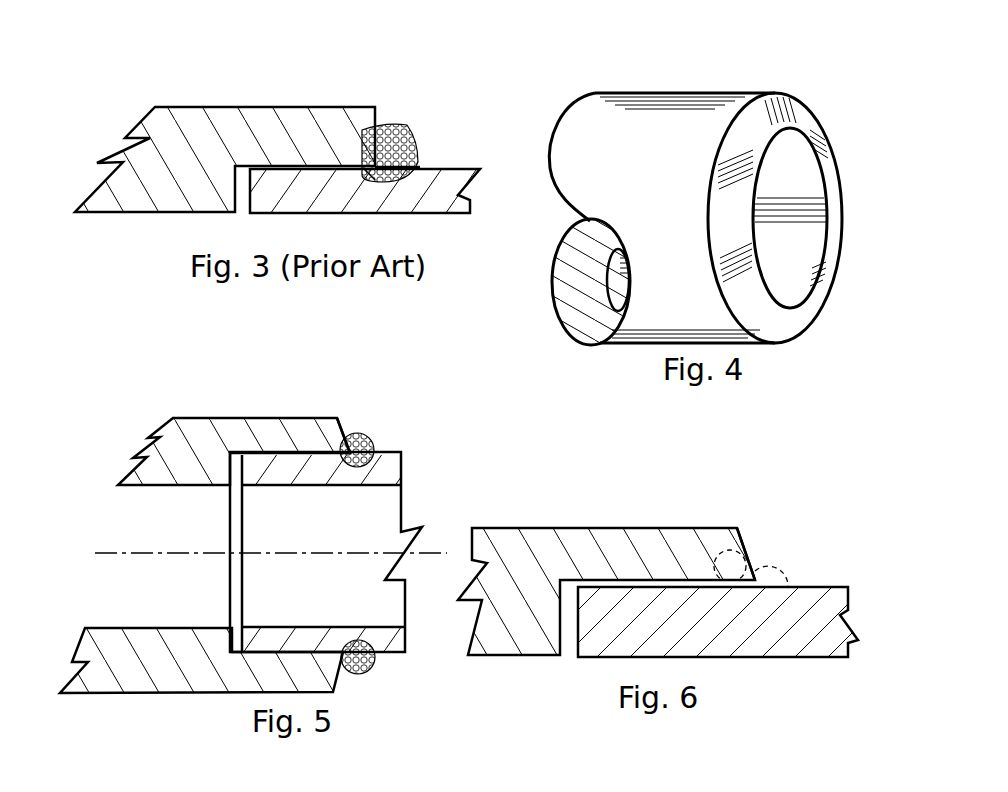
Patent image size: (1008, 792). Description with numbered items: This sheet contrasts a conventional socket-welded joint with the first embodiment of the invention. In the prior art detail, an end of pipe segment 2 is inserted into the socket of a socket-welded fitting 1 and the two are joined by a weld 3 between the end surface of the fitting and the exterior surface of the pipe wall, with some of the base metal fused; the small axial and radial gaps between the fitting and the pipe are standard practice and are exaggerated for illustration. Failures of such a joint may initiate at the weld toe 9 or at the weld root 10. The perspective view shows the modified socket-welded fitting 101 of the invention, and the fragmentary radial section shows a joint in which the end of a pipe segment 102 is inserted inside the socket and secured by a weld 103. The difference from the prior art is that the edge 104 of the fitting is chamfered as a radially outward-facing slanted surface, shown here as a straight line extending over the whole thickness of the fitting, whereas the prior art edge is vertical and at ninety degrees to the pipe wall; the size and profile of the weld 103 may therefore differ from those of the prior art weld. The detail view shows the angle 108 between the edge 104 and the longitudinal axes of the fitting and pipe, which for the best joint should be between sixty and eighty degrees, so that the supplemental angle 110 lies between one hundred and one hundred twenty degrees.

In FIG. 3, the socket-welded fitting 1 is at (190, 122).
In FIG. 3, the pipe segment 2 is at (460, 178).
In FIG. 3, the weld 3 is at (392, 130).
In FIG. 3, the toe 9 is at (424, 159).
In FIG. 3, the root 10 is at (361, 181).
In FIG. 4, the modified socket-welded fitting 101 is at (622, 103).
In FIG. 5, the modified socket-welded fitting 101 is at (193, 425).
In FIG. 6, the modified socket-welded fitting 101 is at (487, 542).
In FIG. 5, the pipe segment 102 is at (390, 468).
In FIG. 6, the pipe segment 102 is at (750, 648).
In FIG. 5, the weld 103 is at (362, 440).
In FIG. 4, the chamfered edge 104 is at (805, 114).
In FIG. 5, the chamfered edge 104 is at (350, 417).
In FIG. 6, the chamfered edge 104 is at (747, 528).
In FIG. 6, the angle 108 is at (727, 560).
In FIG. 6, the supplemental angle 110 is at (789, 571).